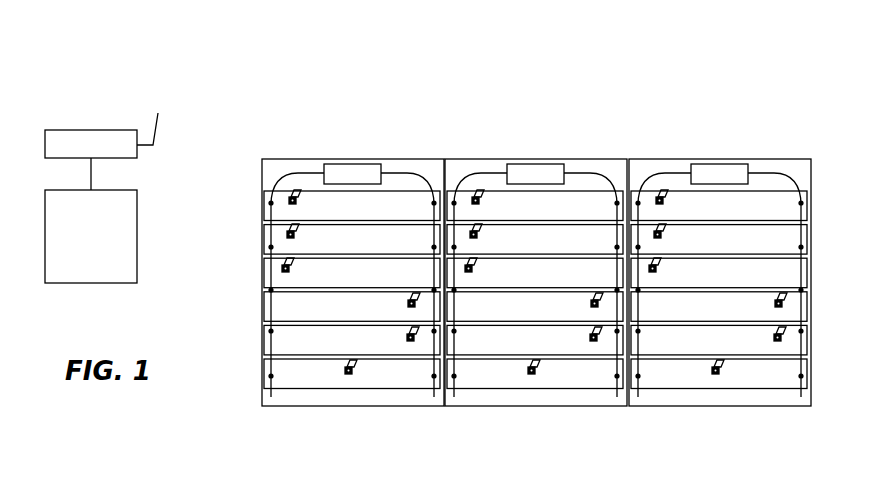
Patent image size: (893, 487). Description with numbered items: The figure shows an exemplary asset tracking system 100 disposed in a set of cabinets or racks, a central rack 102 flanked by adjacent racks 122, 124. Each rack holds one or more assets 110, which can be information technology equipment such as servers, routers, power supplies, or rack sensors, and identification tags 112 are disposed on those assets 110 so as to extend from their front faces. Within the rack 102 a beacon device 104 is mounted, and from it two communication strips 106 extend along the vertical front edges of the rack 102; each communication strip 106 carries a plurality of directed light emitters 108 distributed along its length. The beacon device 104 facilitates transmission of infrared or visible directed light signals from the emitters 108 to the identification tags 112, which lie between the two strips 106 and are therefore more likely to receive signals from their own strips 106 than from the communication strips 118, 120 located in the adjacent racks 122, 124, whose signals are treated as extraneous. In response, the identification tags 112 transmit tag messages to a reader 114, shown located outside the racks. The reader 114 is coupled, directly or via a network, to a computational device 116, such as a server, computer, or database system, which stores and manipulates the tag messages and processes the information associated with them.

The inventory management system 100 is at (124, 84).
The rack 102 is at (554, 260).
The beacon device 104 is at (572, 130).
The communication strip 106 is at (561, 226).
The directed light emitter 108 is at (554, 231).
The asset 110 is at (510, 328).
The identification tag 112 is at (567, 327).
The reader 114 is at (101, 135).
The computational device 116 is at (91, 220).
The communication strip 118 is at (399, 172).
The communication strip 120 is at (719, 267).
The adjacent rack 122 is at (338, 252).
The adjacent rack 124 is at (720, 237).